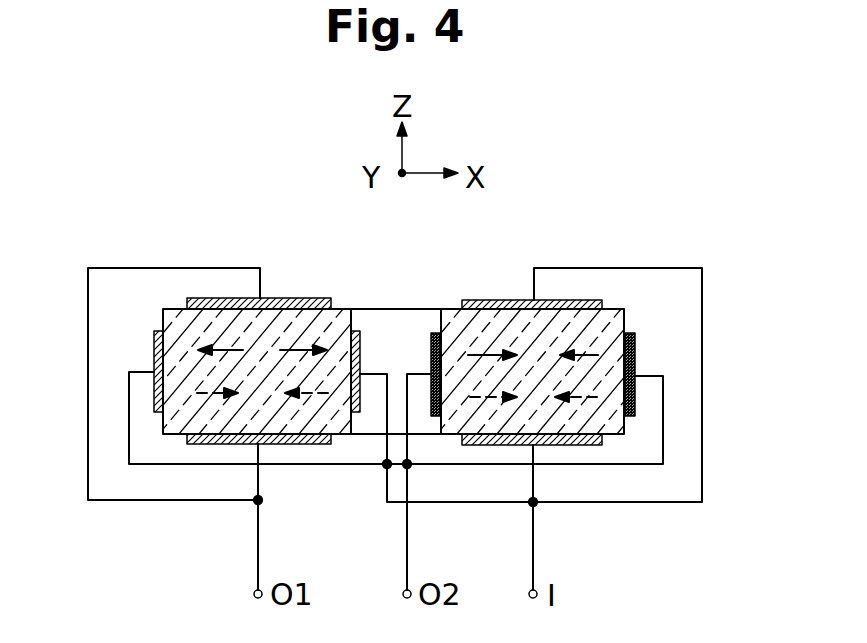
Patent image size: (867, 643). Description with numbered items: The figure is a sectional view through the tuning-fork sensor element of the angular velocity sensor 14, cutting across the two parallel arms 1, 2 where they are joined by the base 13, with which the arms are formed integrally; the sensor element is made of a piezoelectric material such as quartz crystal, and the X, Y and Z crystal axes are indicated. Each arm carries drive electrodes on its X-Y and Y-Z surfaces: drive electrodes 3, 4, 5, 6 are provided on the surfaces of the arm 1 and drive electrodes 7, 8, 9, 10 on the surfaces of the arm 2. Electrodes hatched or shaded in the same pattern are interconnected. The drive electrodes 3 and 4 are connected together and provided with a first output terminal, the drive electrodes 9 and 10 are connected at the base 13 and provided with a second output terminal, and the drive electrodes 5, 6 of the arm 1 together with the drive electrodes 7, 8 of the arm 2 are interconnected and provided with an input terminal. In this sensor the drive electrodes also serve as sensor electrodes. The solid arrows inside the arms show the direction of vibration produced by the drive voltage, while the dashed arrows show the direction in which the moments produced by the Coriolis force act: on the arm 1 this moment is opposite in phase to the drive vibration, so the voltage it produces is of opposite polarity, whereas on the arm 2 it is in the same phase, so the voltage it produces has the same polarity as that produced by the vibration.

The arm 1 is at (169, 320).
The arm 2 is at (610, 330).
The drive electrode 3 is at (213, 445).
The drive electrode 4 is at (218, 302).
The drive electrode 5 is at (158, 392).
The drive electrode 6 is at (364, 405).
The drive electrode 7 is at (575, 446).
The drive electrode 8 is at (486, 303).
The drive electrode 9 is at (431, 412).
The drive electrode 10 is at (636, 350).
The base 13 is at (388, 309).
The angular velocity sensor 14 is at (422, 285).